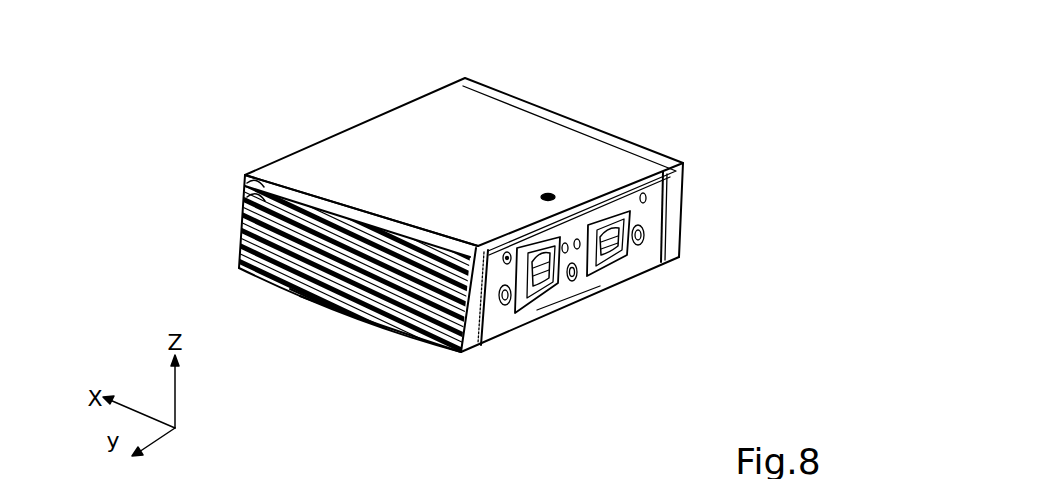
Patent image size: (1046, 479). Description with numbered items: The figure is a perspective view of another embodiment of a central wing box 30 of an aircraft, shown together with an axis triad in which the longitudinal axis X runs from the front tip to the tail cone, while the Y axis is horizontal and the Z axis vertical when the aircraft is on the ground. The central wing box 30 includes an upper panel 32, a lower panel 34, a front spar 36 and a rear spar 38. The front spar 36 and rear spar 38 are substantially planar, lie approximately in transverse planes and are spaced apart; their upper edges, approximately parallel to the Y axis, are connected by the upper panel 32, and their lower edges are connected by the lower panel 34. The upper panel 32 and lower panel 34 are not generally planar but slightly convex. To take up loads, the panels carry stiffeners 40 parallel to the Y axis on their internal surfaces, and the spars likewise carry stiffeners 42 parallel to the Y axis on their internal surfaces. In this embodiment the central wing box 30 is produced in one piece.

The central wing box 30 is at (698, 277).
The upper panel 32 is at (523, 140).
The lower panel 34 is at (354, 322).
The front spar 36 is at (245, 220).
The rear spar 38 is at (500, 320).
The stiffeners 40 is at (330, 312).
The stiffeners 42 is at (245, 187).